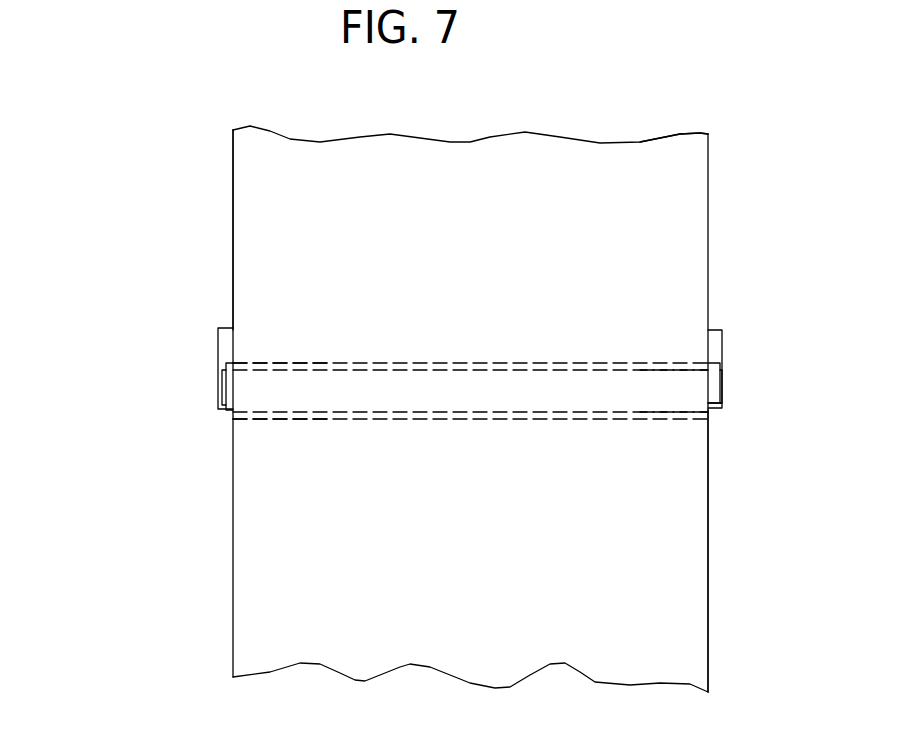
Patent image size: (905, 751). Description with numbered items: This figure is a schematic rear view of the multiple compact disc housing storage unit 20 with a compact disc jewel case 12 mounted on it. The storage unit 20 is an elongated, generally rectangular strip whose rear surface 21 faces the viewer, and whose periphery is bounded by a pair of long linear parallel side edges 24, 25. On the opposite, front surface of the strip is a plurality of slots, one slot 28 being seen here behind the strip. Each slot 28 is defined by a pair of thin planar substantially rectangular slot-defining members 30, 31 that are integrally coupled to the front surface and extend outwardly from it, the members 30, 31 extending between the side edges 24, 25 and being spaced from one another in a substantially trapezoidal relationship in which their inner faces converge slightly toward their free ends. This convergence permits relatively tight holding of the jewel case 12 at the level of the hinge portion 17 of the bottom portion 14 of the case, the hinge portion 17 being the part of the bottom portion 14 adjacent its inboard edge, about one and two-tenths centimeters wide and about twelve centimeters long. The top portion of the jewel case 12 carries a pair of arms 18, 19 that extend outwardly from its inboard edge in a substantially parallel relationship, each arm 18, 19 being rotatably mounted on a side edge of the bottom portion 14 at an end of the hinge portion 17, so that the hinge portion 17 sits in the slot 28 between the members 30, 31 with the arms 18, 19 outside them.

The compact disc jewel case 12 is at (218, 340).
The bottom portion 14 is at (517, 392).
The hinge portion 17 is at (218, 405).
The arm 18 is at (718, 388).
The arm 19 is at (218, 392).
The multiple compact disc housing storage unit 20 is at (265, 550).
The rear surface 21 is at (683, 170).
The side edge 24 is at (710, 578).
The side edge 25 is at (233, 185).
The slot 28 is at (660, 380).
The slot-defining member 30 is at (296, 362).
The slot-defining member 31 is at (297, 418).